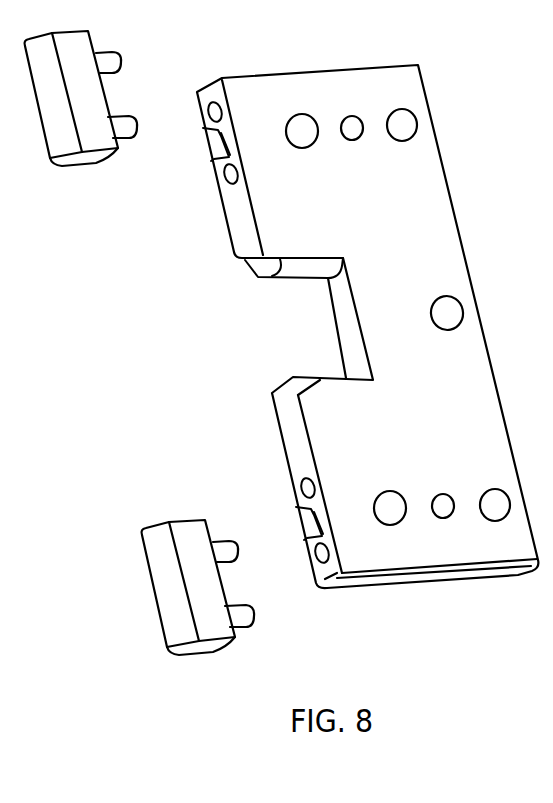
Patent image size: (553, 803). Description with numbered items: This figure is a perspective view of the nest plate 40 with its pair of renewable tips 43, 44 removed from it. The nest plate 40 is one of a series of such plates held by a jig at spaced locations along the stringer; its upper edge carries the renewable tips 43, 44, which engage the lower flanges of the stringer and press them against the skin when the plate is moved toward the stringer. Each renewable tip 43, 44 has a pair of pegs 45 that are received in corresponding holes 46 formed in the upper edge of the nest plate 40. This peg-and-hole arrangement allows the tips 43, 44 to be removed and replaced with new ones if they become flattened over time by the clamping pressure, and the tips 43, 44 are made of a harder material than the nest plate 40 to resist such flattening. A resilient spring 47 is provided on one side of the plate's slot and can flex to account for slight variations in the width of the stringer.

The nest plate 40 is at (438, 200).
The renewable tip 43 is at (48, 118).
The renewable tip 44 is at (170, 597).
The pegs 45 is at (117, 65).
The holes 46 is at (229, 174).
The resilient spring 47 is at (255, 266).